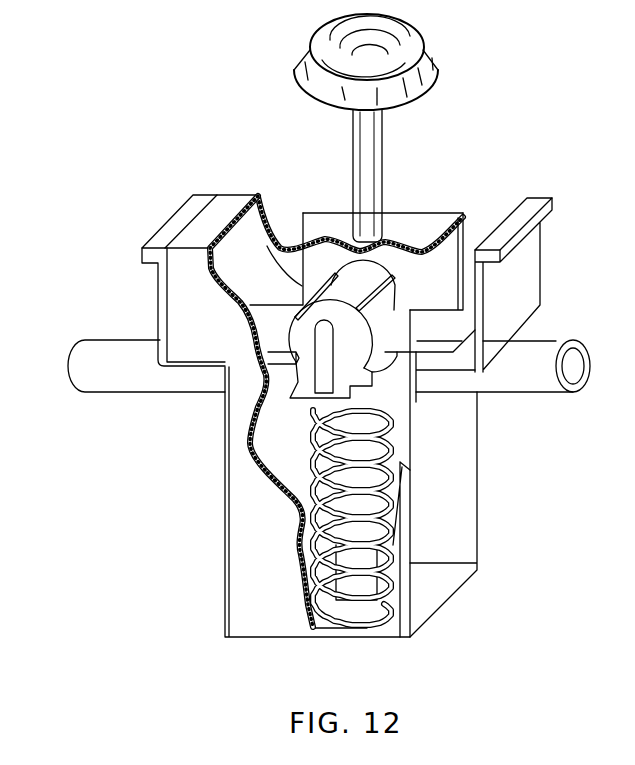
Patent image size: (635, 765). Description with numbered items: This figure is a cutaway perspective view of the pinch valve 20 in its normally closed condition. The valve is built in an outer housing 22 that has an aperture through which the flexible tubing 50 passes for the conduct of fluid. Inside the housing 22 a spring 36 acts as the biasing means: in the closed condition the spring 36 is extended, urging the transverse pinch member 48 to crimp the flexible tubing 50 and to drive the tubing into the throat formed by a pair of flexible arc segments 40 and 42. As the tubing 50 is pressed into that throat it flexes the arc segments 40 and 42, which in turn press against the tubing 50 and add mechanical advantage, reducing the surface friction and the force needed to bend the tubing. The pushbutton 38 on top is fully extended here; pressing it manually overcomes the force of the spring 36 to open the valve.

The pinch valve 20 is at (190, 510).
The outer housing 22 is at (243, 577).
The spring 36 is at (353, 620).
The pushbutton 38 is at (323, 84).
The arc segment 40 is at (270, 335).
The arc segment 42 is at (417, 327).
The transverse pinch member 48 is at (423, 227).
The flexible tubing 50 is at (553, 352).